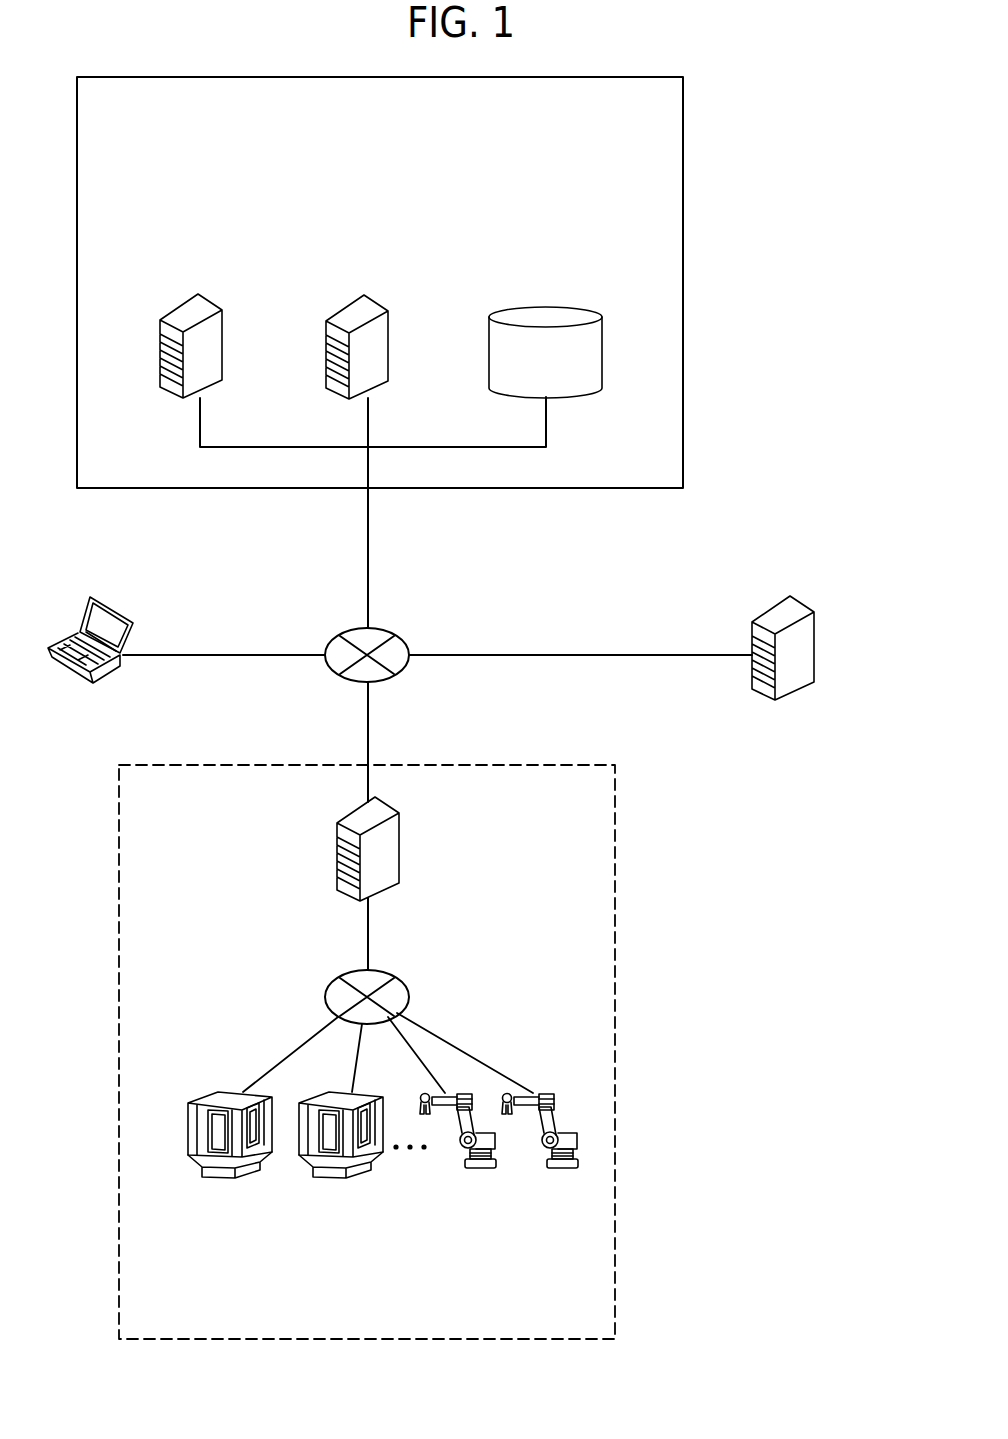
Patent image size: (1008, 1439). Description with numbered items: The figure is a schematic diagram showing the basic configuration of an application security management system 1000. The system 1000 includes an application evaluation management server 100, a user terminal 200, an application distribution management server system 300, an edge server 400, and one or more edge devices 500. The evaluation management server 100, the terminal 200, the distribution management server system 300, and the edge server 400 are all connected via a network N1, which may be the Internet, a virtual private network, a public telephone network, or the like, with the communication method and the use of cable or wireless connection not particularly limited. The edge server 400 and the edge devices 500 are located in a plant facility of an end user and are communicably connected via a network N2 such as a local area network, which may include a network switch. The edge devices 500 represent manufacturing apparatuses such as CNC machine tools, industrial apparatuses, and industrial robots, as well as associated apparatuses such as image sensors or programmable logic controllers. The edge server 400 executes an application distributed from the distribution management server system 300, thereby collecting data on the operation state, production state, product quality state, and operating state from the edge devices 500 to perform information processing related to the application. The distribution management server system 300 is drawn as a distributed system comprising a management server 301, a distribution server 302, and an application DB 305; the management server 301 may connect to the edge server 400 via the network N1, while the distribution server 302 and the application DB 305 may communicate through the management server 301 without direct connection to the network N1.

The application security management system 1000 is at (862, 102).
The application distribution management server system 300 is at (380, 282).
The management server 301 is at (195, 296).
The distribution server 302 is at (366, 296).
The application DB 305 is at (571, 298).
The network N1 is at (347, 632).
The network N2 is at (347, 974).
The user terminal 200 is at (94, 684).
The application evaluation management server 100 is at (811, 713).
The edge server 400 is at (400, 848).
The edge device 500 is at (557, 1192).